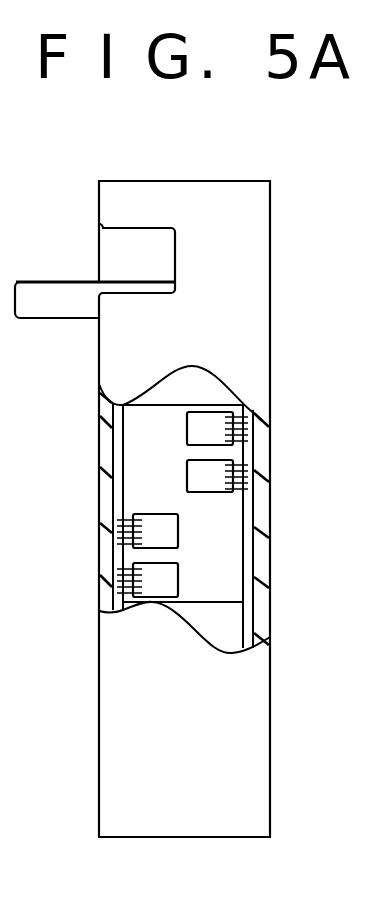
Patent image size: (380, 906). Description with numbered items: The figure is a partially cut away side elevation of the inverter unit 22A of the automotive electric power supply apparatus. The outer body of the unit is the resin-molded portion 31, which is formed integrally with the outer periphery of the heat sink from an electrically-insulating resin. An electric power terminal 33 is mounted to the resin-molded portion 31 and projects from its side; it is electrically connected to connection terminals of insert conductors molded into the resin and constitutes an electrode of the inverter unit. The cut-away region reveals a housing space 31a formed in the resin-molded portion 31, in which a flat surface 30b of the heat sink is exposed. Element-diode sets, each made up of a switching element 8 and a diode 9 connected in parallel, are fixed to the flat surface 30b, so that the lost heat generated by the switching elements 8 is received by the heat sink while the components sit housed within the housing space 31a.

The inverter unit 22A is at (340, 173).
The resin-molded portion 31 is at (266, 352).
The housing space 31a is at (114, 457).
The electric power terminal 33 is at (46, 292).
The flat surface 30b is at (227, 544).
The switching element 8 is at (217, 420).
The diode 9 is at (215, 468).